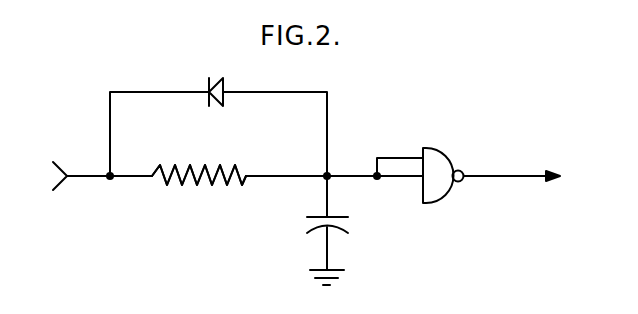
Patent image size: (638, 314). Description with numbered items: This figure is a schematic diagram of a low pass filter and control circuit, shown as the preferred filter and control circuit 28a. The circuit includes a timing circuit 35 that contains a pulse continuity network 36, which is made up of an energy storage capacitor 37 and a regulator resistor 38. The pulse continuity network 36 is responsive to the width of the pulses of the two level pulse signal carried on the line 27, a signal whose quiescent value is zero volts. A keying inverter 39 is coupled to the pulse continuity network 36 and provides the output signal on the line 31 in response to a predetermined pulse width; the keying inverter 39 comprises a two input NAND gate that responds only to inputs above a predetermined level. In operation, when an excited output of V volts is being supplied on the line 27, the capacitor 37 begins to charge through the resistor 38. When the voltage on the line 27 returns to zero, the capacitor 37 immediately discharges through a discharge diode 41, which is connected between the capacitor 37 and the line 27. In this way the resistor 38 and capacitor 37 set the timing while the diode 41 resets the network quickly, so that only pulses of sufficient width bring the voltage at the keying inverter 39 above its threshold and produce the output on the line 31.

The line 27 is at (85, 172).
The filter and control circuit 28a is at (439, 136).
The line 31 is at (507, 175).
The timing circuit 35 is at (263, 90).
The pulse continuity network 36 is at (160, 185).
The energy storage capacitor 37 is at (320, 216).
The regulator resistor 38 is at (199, 166).
The keying inverter 39 is at (440, 160).
The discharge diode 41 is at (208, 86).